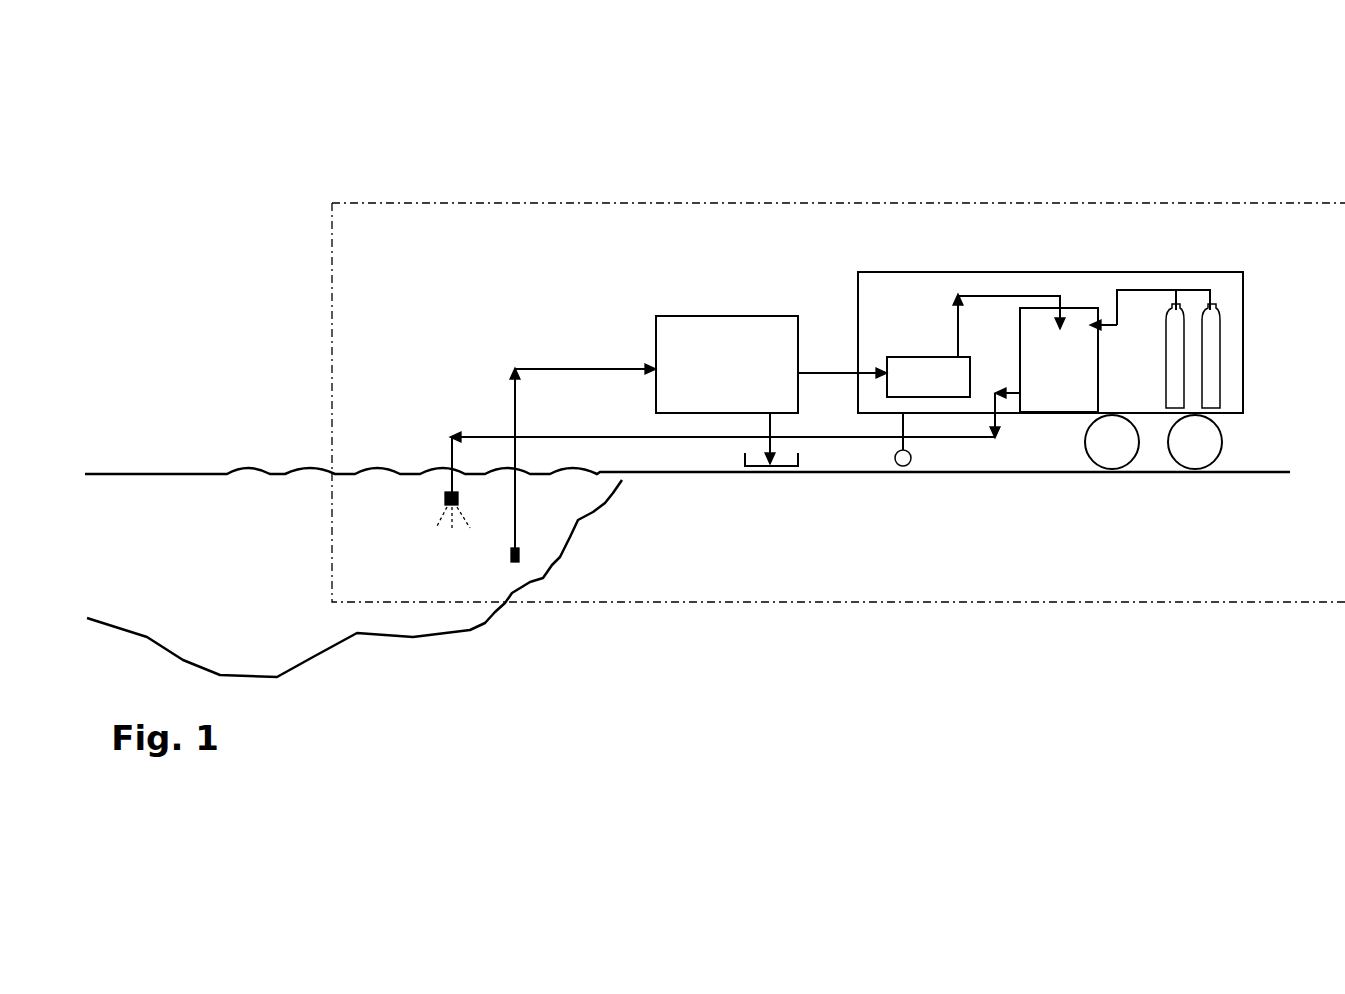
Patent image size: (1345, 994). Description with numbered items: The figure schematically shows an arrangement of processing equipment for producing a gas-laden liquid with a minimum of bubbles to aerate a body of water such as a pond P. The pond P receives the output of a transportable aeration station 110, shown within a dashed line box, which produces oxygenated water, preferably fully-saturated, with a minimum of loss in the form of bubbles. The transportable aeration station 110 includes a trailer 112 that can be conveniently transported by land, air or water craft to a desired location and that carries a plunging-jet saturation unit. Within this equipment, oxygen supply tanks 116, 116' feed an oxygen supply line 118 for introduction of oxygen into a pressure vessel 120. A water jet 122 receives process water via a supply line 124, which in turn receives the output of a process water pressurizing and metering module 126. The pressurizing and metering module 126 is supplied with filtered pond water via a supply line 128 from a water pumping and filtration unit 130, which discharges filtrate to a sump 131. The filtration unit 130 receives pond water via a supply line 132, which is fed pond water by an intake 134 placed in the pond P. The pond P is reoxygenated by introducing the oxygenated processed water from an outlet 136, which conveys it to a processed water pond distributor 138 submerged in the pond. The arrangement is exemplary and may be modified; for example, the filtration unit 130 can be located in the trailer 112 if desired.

The transportable aeration station 110 is at (713, 167).
The trailer 112 is at (883, 283).
The oxygen supply tank 116 is at (1207, 314).
The oxygen supply tank 116' is at (1266, 346).
The oxygen supply line 118 is at (1123, 308).
The pressure vessel 120 is at (1059, 360).
The water jet 122 is at (1062, 300).
The supply line 124 is at (977, 293).
The process water pressurizing and metering module 126 is at (928, 377).
The supply line 128 is at (847, 367).
The water pumping and filtration unit 130 is at (727, 364).
The sump 131 is at (798, 460).
The supply line 132 is at (562, 368).
The intake 134 is at (513, 539).
The outlet 136 is at (997, 428).
The processed water pond distributor 138 is at (442, 505).
The pond P is at (277, 459).